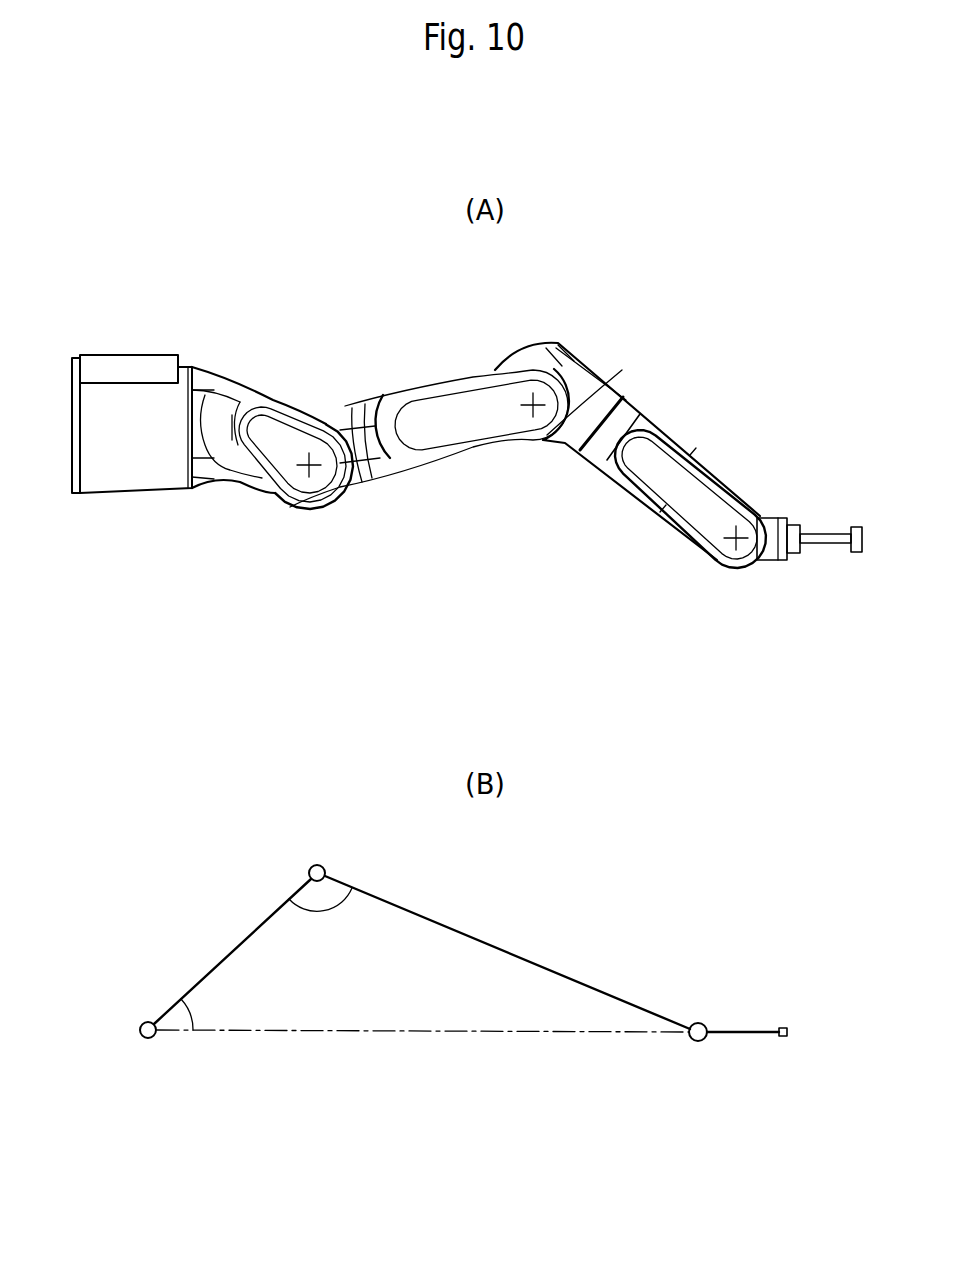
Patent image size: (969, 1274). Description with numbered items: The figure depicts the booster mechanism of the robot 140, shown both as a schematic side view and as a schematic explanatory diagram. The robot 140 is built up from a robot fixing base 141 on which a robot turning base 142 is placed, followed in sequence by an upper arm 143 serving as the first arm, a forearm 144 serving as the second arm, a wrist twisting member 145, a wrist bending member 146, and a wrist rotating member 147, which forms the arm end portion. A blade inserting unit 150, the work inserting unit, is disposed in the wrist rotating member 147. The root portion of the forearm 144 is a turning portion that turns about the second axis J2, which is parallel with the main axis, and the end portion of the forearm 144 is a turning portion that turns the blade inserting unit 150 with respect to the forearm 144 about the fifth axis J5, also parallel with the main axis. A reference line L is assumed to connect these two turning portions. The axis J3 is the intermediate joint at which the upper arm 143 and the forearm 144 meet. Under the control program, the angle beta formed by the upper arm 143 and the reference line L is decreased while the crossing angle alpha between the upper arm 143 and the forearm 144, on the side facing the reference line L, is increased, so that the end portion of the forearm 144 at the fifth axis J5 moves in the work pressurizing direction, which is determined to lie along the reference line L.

The robot 140 is at (603, 373).
The robot fixing base 141 is at (125, 487).
The robot turning base 142 is at (296, 404).
The upper arm (first arm) 143 is at (453, 385).
The forearm (second arm) 144 is at (588, 390).
The wrist twisting member 145 is at (720, 472).
The wrist bending member 146 is at (772, 561).
The wrist rotating member 147 is at (790, 562).
The blade inserting unit (work inserting unit) 150 is at (855, 528).
The second axis J2 is at (147, 1048).
The joint J3 axis J3 is at (316, 857).
The fifth axis J5 is at (696, 1050).
The reference line L is at (406, 1040).
The crossing angle alpha is at (320, 914).
The angle formed by the upper arm and the reference line beta is at (200, 1009).